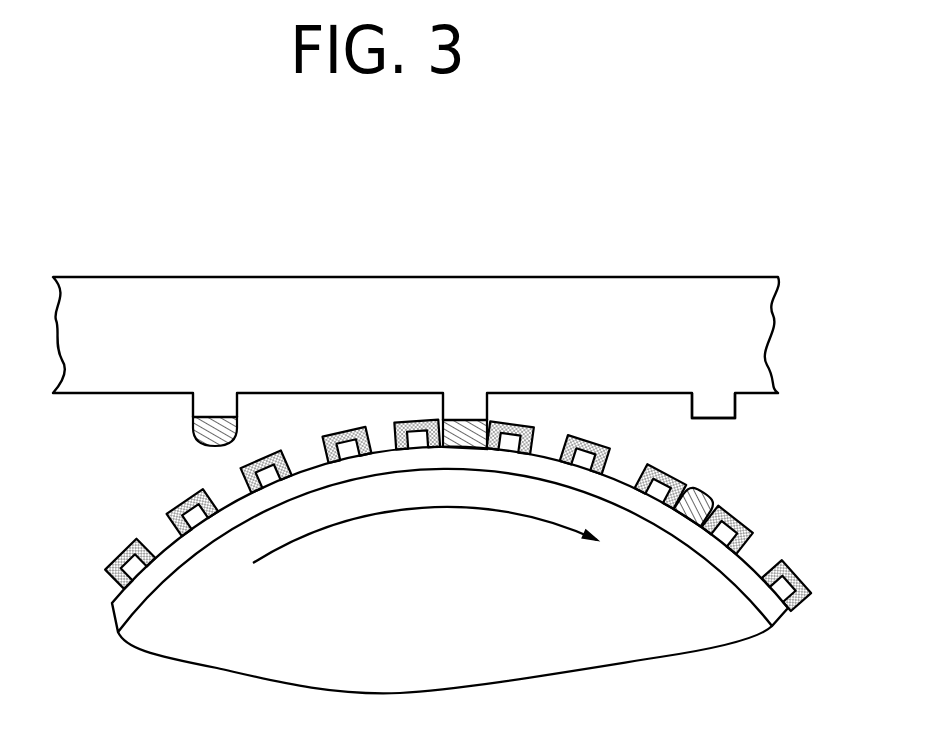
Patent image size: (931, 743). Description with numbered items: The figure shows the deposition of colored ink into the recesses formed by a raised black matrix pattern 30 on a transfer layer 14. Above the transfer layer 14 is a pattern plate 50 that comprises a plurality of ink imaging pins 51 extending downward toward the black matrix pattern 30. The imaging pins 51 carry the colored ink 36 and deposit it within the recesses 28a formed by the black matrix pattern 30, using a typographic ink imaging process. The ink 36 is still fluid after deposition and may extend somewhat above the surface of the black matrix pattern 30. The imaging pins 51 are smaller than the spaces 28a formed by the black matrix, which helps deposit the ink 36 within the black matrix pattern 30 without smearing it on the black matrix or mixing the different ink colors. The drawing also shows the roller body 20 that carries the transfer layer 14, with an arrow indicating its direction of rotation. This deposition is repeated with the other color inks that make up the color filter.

The transfer layer 14 is at (765, 598).
The roller 20 is at (472, 638).
The recesses 28a is at (175, 537).
The black matrix pattern 30 is at (123, 555).
The colored inks 36 is at (193, 433).
The pattern plate 50 is at (394, 333).
The ink imaging pins 51 is at (720, 402).